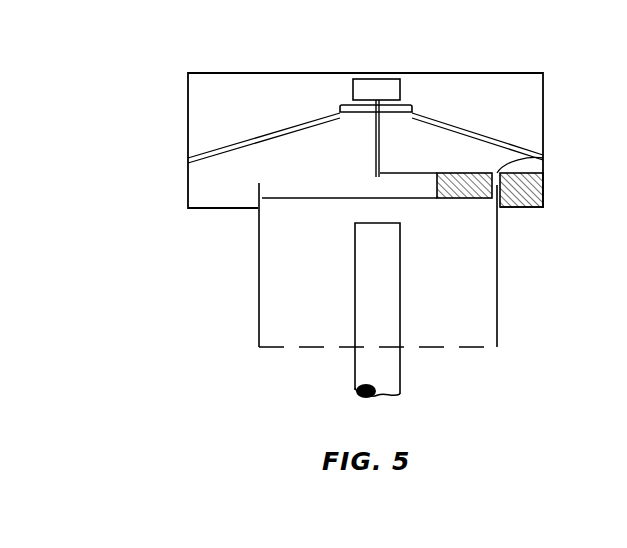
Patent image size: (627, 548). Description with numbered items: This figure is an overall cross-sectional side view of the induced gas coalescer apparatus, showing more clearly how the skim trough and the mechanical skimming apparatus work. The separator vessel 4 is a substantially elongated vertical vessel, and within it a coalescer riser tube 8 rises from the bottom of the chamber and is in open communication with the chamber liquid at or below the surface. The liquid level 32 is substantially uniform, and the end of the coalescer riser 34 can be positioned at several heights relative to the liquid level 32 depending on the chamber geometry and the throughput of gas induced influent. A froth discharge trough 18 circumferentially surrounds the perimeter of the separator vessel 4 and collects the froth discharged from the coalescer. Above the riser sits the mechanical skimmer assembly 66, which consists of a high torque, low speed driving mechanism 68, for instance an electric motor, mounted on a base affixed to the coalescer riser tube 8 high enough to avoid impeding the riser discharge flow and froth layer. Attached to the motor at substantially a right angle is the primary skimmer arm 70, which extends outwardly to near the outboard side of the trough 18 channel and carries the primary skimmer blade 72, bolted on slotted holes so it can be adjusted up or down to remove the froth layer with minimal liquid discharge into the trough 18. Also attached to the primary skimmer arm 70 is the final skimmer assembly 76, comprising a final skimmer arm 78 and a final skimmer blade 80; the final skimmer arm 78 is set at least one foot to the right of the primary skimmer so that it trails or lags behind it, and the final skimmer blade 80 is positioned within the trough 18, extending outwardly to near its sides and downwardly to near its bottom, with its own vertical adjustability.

The separator vessel 4 is at (497, 308).
The coalescer riser tube 8 is at (385, 297).
The froth discharge trough 18 is at (188, 184).
The liquid level 32 is at (319, 198).
The end of the coalescer riser 34 is at (400, 223).
The mechanical skimmer assembly 66 is at (470, 140).
The driving mechanism 68 is at (382, 73).
The primary skimmer arm 70 is at (400, 172).
The primary skimmer blade 72 is at (447, 172).
The final skimmer assembly 76 is at (545, 179).
The final skimmer arm 78 is at (543, 158).
The final skimmer blade 80 is at (545, 204).